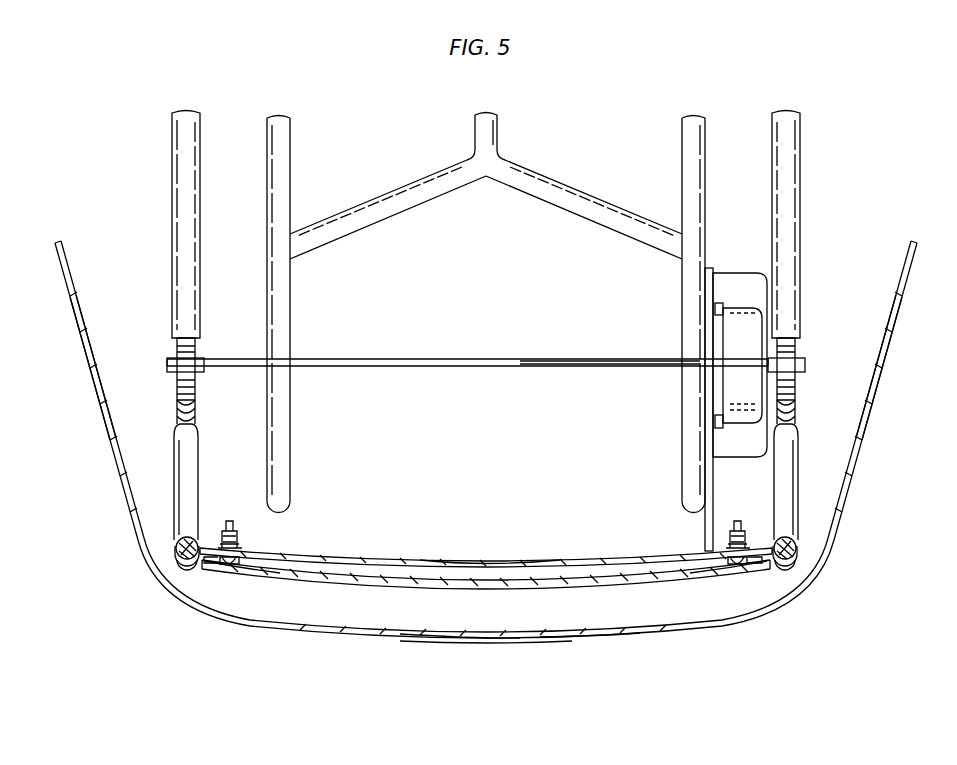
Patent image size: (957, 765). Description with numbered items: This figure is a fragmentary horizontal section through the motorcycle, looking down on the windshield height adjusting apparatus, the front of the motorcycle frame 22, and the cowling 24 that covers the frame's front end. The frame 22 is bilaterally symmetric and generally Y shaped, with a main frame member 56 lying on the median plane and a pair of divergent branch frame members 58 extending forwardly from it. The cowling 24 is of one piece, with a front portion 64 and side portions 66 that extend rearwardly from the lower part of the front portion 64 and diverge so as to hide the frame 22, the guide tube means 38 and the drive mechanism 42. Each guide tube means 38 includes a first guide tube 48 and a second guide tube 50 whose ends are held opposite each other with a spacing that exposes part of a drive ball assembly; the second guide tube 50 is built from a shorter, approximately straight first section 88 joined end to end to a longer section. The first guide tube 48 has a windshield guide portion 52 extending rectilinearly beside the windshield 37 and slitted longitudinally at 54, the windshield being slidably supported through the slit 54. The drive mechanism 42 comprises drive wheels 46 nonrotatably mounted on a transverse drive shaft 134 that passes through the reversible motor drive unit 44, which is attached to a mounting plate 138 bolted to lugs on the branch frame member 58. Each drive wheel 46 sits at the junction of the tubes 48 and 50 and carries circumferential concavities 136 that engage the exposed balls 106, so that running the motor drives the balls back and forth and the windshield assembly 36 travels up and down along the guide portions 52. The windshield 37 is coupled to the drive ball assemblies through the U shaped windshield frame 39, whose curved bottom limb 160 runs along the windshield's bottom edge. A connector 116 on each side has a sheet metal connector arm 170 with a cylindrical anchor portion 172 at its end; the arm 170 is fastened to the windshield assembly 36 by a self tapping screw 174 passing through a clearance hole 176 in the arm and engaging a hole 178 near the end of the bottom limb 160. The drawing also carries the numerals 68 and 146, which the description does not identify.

The motorcycle frame 22 is at (563, 216).
The cowling 24 is at (372, 634).
The windshield assembly 36 is at (513, 590).
The windshield 37 is at (470, 579).
The guide tube means 38 is at (752, 152).
The windshield frame 39 is at (536, 558).
The drive mechanism 42 is at (590, 368).
The motor drive unit 44 is at (735, 275).
The drive wheel 46 is at (806, 342).
The first guide tube 48 is at (800, 490).
The second guide tube 50 is at (802, 178).
The windshield guide portion 52 is at (800, 558).
The slit 54 is at (752, 530).
The main frame member 56 is at (499, 135).
The branch frame member 58 is at (681, 197).
The front portion of cowling 64 is at (578, 639).
The side portion of cowling 66 is at (890, 362).
The housing bottom 68 is at (445, 639).
The first section of second guide tube 88 is at (793, 275).
The ball 106 is at (797, 416).
The connector 116 is at (718, 572).
The drive shaft 134 is at (487, 359).
The concavities 136 is at (796, 380).
The mounting plate 138 is at (707, 292).
The cup 146 is at (778, 575).
The bottom limb 160 is at (374, 556).
The connector arm 170 is at (750, 562).
The anchor portion 172 is at (799, 548).
The self tapping screw 174 is at (735, 564).
The clearance hole 176 is at (746, 566).
The hole 178 is at (738, 524).